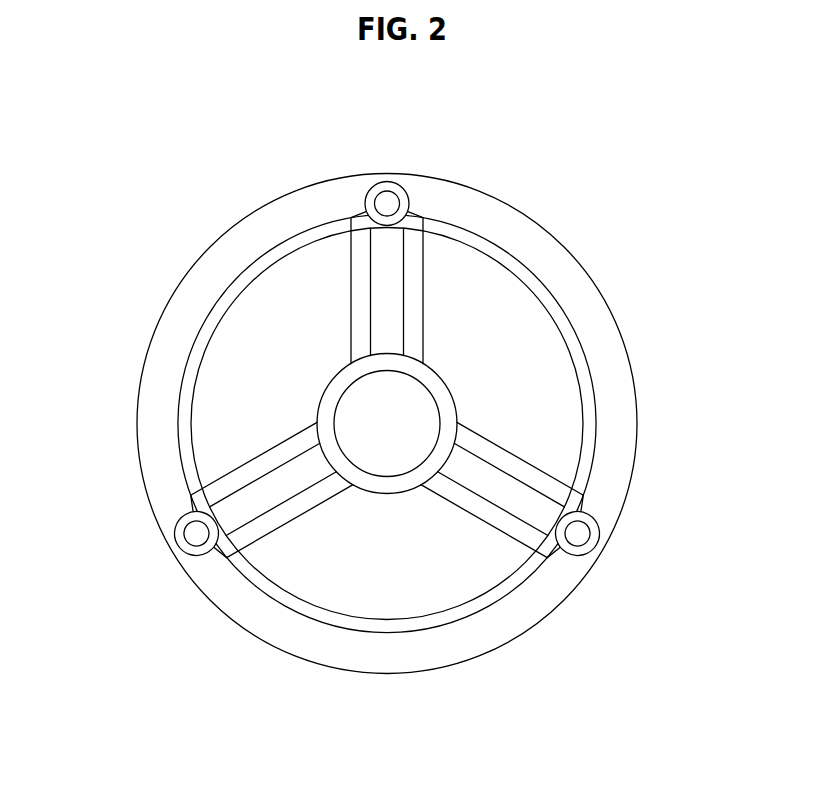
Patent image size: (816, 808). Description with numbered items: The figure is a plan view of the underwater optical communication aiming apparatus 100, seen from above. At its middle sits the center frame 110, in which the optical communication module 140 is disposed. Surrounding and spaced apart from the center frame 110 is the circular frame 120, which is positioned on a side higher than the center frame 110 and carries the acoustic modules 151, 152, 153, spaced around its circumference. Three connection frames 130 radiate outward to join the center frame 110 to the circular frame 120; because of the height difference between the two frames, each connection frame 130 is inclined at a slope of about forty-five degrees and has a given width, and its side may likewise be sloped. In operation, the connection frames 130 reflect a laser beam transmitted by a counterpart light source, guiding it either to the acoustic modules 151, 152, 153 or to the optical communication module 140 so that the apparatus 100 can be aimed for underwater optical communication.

The underwater optical communication aiming apparatus 100 is at (190, 222).
The center frame 110 is at (390, 484).
The circular frame 120 is at (601, 309).
The connection frame 130 is at (520, 470).
The optical communication module 140 is at (347, 408).
The acoustic module 151 is at (383, 182).
The acoustic module 152 is at (599, 535).
The acoustic module 153 is at (175, 534).